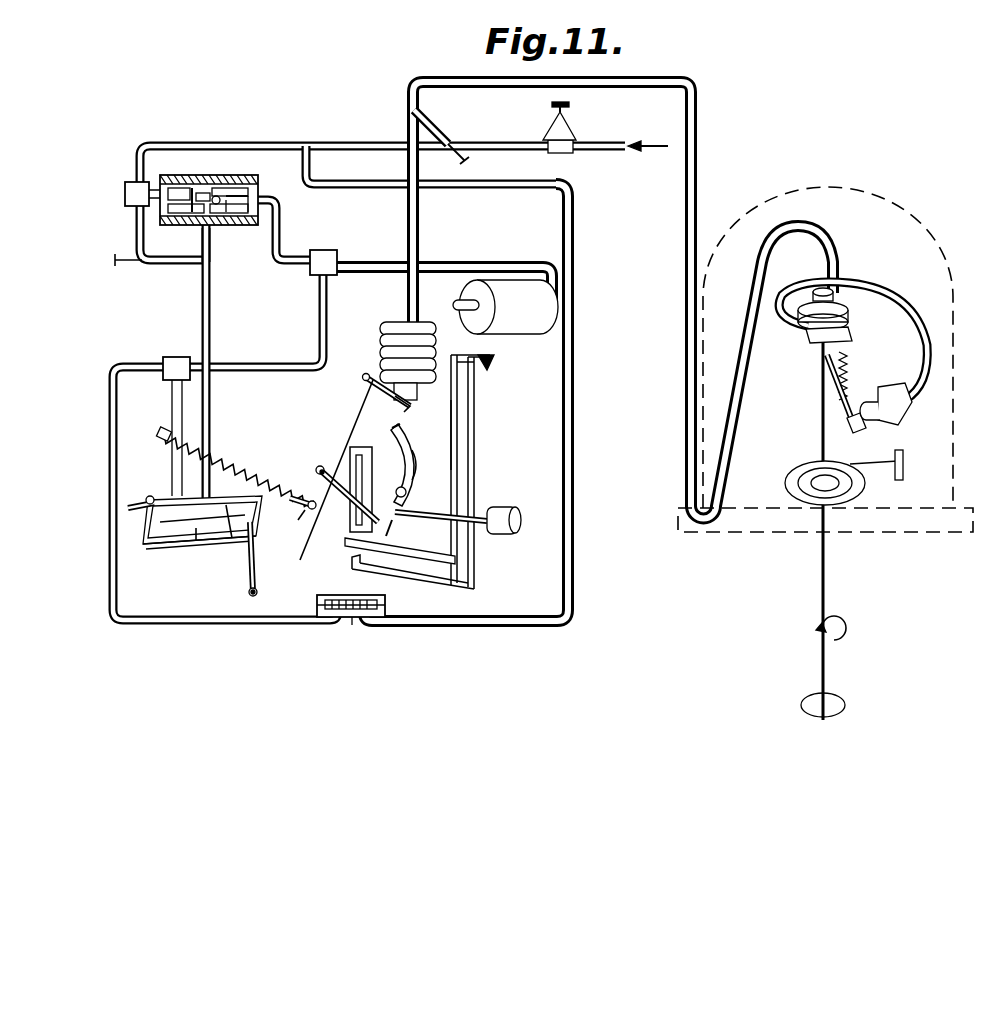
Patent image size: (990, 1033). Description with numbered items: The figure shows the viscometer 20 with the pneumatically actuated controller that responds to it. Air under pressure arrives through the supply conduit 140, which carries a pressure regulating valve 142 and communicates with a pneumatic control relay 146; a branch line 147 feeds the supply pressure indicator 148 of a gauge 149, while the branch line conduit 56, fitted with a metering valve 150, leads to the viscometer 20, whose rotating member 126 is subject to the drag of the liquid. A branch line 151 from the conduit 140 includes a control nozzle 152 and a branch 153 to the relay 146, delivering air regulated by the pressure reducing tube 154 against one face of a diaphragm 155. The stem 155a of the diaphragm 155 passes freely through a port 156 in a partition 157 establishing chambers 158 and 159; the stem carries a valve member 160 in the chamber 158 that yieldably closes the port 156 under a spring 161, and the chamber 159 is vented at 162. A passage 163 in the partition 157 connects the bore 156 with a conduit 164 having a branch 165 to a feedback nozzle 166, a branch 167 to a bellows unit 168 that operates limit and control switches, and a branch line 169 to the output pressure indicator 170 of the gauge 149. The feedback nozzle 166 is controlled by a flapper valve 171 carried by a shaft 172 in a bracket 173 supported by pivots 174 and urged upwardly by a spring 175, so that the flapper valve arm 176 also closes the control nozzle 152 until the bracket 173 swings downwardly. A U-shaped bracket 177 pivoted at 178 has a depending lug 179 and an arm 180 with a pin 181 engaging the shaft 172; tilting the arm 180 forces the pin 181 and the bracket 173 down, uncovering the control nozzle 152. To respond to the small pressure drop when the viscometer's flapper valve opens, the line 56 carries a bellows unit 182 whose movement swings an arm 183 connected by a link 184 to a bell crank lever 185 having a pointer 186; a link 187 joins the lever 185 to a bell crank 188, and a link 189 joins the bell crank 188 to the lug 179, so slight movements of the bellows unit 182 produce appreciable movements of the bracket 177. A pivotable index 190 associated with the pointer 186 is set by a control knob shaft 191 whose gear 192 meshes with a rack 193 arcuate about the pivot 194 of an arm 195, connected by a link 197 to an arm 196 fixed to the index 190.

The viscometer 20 is at (856, 192).
The branch line conduit 56 is at (698, 186).
The member 126 is at (808, 702).
The supply conduit 140 is at (615, 150).
The pressure regulating valve 142 is at (566, 133).
The pneumatic control relay 146 is at (160, 178).
The branch line 147 is at (575, 402).
The supply pressure indicator 148 is at (387, 608).
The gauge 149 is at (352, 620).
The metering valve 150 is at (432, 136).
The branch line 151 is at (211, 323).
The control nozzle 152 is at (226, 492).
The branch 153 is at (212, 258).
The pressure reducing tube 154 is at (146, 266).
The diaphragm 155 is at (192, 214).
The stem 155a is at (230, 216).
The port 156 is at (168, 208).
The partition 157 is at (222, 196).
The chamber 158 is at (222, 188).
The chamber 159 is at (250, 205).
The valve member 160 is at (203, 193).
The spring 161 is at (188, 190).
The vent 162 is at (110, 210).
The passage 163 is at (240, 197).
The conduit 164 is at (293, 258).
The branch 165 is at (172, 418).
The feedback nozzle 166 is at (176, 480).
The branch 167 is at (455, 263).
The bellows unit 168 is at (513, 318).
The branch line 169 is at (109, 458).
The output pressure indicator 170 is at (328, 594).
The flapper valve 171 is at (178, 526).
The shaft 172 is at (229, 536).
The bracket 173 is at (142, 540).
The pivots 174 is at (128, 509).
The spring 175 is at (214, 470).
The flapper valve arm 176 is at (196, 541).
The U-shaped bracket 177 is at (146, 546).
The pivot 178 is at (150, 499).
The depending lug 179 is at (250, 596).
The arm 180 is at (238, 562).
The pin 181 is at (338, 484).
The bellows unit 182 is at (384, 327).
The arm 183 is at (366, 375).
The link 184 is at (355, 420).
The bell crank lever 185 is at (301, 512).
The pointer 186 is at (475, 460).
The link 187 is at (394, 446).
The bell crank 188 is at (352, 448).
The link 189 is at (316, 549).
The pivotable index 190 is at (470, 421).
The control knob shaft 191 is at (496, 536).
The gear 192 is at (410, 516).
The rack 193 is at (415, 458).
The pivot 194 is at (407, 492).
The arm 195 is at (402, 429).
The arm 196 is at (320, 468).
The link 197 is at (396, 402).